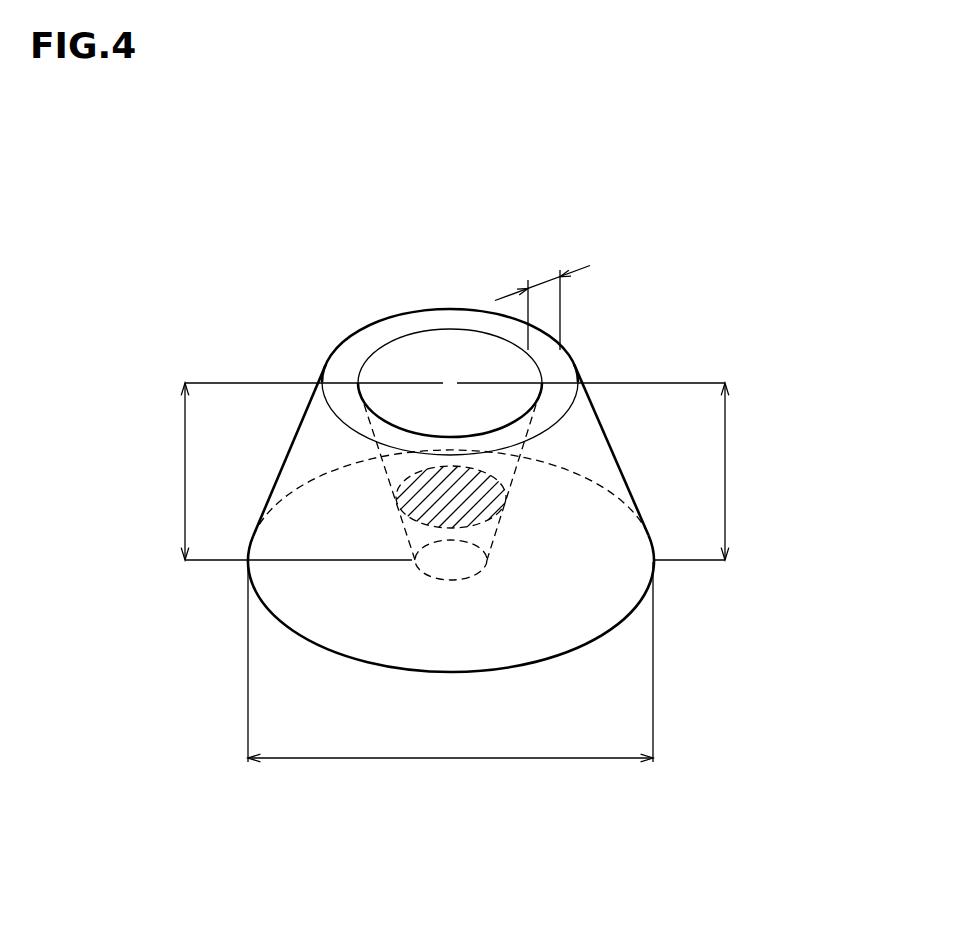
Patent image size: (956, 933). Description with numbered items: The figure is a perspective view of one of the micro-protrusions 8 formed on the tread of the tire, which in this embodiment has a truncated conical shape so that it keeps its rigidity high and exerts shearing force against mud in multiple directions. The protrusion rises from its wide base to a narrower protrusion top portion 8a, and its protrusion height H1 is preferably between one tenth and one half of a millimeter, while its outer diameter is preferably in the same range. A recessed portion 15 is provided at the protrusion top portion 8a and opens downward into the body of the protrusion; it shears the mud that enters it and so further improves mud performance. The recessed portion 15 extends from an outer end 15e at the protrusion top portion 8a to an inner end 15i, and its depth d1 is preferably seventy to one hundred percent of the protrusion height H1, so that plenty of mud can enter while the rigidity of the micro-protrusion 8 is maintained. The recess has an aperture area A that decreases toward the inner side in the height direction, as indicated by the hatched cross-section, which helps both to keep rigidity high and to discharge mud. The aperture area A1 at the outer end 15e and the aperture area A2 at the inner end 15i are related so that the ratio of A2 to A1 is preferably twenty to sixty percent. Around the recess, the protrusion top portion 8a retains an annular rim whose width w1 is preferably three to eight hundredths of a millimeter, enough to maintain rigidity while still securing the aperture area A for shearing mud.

The micro-protrusion 8 is at (617, 312).
The protrusion top portion 8a is at (467, 307).
The recessed portion 15 is at (429, 348).
The outer end 15e is at (393, 310).
The inner end 15i is at (462, 583).
The aperture area A is at (505, 497).
The aperture area at outer end A1 is at (407, 358).
The aperture area at inner end A2 is at (447, 563).
The depth of recessed portion d1 is at (436, 471).
The protrusion height H1 is at (714, 471).
The width of protrusion top portion w1 is at (542, 298).